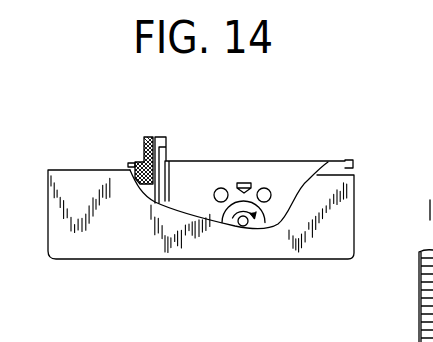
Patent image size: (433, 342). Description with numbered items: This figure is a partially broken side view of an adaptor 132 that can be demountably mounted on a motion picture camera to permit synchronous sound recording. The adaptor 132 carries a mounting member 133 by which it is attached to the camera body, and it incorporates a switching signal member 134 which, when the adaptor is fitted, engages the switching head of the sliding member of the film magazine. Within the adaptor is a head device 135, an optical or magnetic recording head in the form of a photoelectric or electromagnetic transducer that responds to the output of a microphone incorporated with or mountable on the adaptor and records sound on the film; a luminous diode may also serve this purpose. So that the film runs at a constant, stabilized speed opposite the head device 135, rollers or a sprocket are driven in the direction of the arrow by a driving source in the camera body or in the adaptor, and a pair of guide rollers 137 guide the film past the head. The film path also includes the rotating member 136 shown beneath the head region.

The adaptor 132 is at (108, 243).
The mounting member 133 is at (135, 163).
The switching signal member 134 is at (160, 147).
The head device 135 is at (244, 183).
The rotary ratchet wheel 136 is at (255, 222).
The guide rollers 137 is at (264, 188).